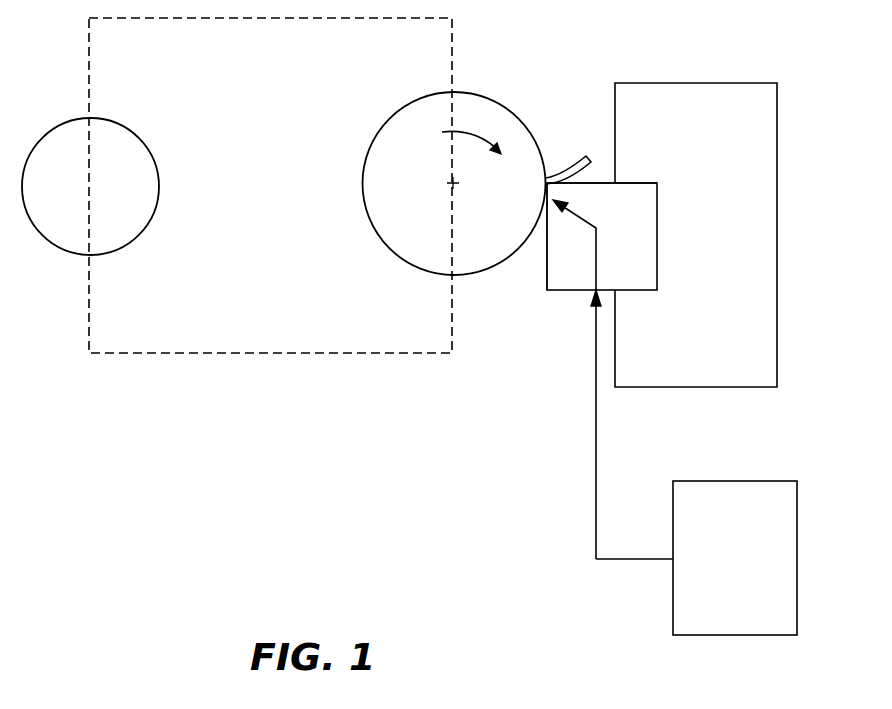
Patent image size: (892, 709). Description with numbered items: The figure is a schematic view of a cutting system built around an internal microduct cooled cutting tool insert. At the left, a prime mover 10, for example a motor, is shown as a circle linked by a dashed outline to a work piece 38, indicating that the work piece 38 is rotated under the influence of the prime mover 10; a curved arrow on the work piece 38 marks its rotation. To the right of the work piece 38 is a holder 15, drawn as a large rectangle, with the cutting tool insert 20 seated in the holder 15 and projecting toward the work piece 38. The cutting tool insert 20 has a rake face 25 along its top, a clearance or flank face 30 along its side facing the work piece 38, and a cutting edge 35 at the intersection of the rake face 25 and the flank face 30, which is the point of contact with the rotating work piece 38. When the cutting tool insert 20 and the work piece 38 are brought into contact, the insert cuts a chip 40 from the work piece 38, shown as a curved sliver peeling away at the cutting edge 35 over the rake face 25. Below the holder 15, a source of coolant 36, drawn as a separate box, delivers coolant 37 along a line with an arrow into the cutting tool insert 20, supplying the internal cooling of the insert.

The prime mover 10 is at (70, 230).
The holder 15 is at (720, 88).
The cutting tool insert 20 is at (643, 228).
The rake face 25 is at (600, 182).
The flank face 30 is at (546, 260).
The cutting edge 35 is at (545, 183).
The source of coolant 36 is at (798, 527).
The coolant 37 is at (596, 443).
The work piece 38 is at (395, 226).
The chip 40 is at (578, 157).